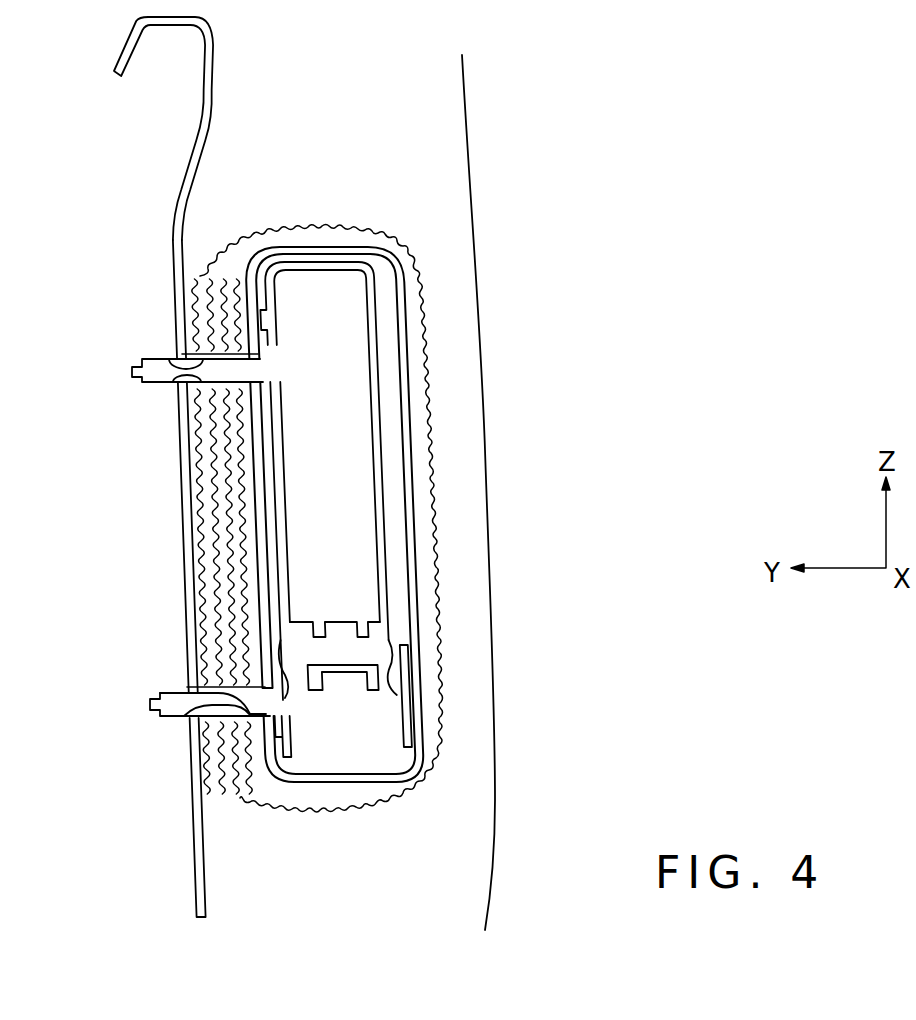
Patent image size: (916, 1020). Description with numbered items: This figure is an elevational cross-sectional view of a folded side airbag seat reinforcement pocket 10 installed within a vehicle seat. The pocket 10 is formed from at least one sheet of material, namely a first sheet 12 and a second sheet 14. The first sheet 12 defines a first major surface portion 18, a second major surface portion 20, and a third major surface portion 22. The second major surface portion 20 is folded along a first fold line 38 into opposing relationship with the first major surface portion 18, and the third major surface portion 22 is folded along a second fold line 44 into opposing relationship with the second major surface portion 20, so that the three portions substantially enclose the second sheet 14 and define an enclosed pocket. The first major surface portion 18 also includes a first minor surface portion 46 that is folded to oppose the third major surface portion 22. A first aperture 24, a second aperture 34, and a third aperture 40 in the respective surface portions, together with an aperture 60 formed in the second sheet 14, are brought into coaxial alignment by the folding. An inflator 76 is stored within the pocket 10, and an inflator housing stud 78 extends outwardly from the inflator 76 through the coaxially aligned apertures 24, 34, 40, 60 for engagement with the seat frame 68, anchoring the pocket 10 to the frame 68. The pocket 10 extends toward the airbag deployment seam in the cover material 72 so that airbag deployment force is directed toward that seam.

The side airbag seat reinforcement pocket 10 is at (368, 135).
The first sheet 12 is at (430, 553).
The second sheet 14 is at (213, 543).
The first major surface portion 18 is at (428, 447).
The second major surface portion 20 is at (220, 638).
The third major surface portion 22 is at (223, 613).
The first aperture 24 is at (183, 378).
The second aperture 34 is at (186, 716).
The first fold line 38 is at (322, 816).
The third aperture 40 is at (418, 98).
The second fold line 44 is at (304, 222).
The first minor surface portion 46 is at (200, 495).
The aperture 60 is at (157, 707).
The frame 68 is at (160, 15).
The cover material 72 is at (475, 160).
The inflator 76 is at (343, 325).
The inflator housing stud 78 is at (246, 368).